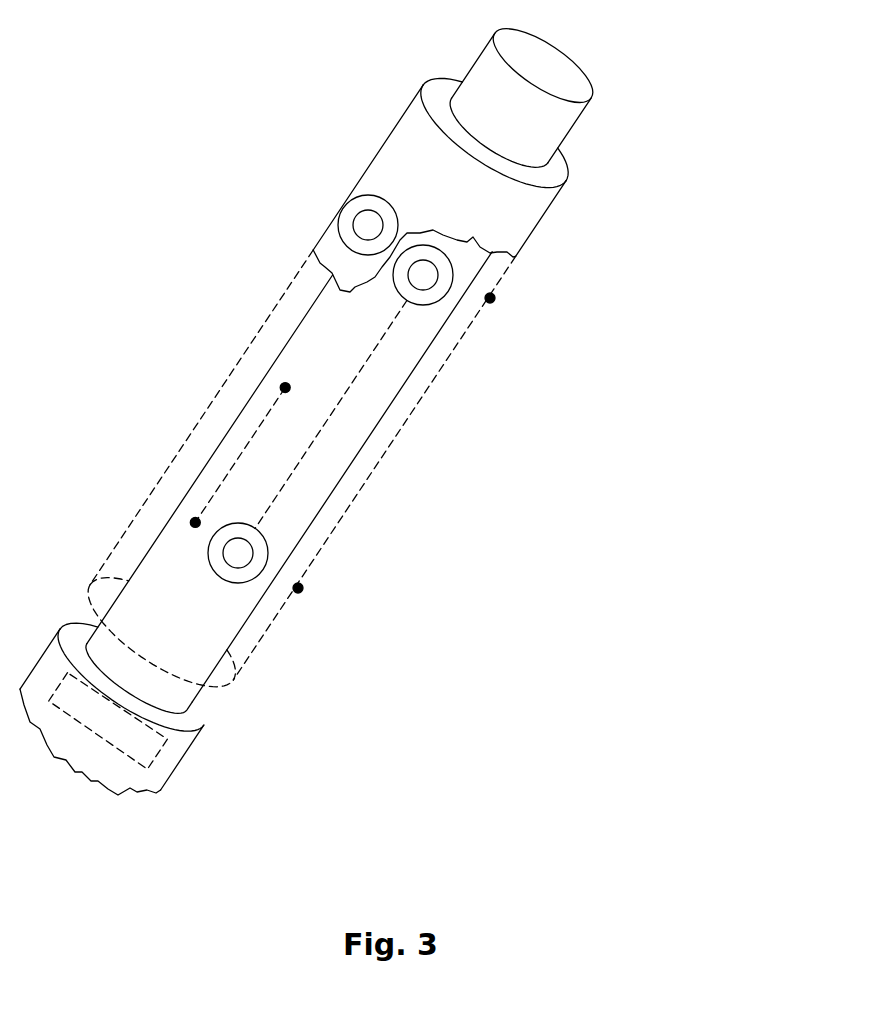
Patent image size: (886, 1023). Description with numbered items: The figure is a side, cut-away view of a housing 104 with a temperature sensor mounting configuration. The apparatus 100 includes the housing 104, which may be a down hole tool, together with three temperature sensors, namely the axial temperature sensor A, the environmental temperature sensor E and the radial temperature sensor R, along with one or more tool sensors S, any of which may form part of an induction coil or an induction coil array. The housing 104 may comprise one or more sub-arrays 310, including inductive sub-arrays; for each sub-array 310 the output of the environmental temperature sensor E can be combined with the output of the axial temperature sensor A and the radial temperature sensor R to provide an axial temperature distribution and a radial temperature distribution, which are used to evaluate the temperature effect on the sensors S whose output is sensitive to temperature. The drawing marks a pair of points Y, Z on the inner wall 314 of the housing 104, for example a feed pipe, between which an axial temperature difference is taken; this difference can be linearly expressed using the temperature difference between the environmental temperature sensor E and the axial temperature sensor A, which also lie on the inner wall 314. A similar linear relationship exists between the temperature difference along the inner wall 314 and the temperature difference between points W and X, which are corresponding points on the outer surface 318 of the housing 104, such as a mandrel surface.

The apparatus 100 is at (341, 403).
The housing 104 is at (558, 53).
The sub-array 310 is at (559, 219).
The inner wall 314 is at (340, 477).
The outer surface 318 is at (410, 103).
The radial temperature sensor R is at (378, 212).
The tool sensor S is at (399, 216).
The axial temperature sensor A is at (430, 289).
The environmental temperature sensor E is at (232, 567).
The point Z is at (285, 388).
The point Y is at (195, 522).
The point X is at (490, 298).
The point W is at (298, 588).